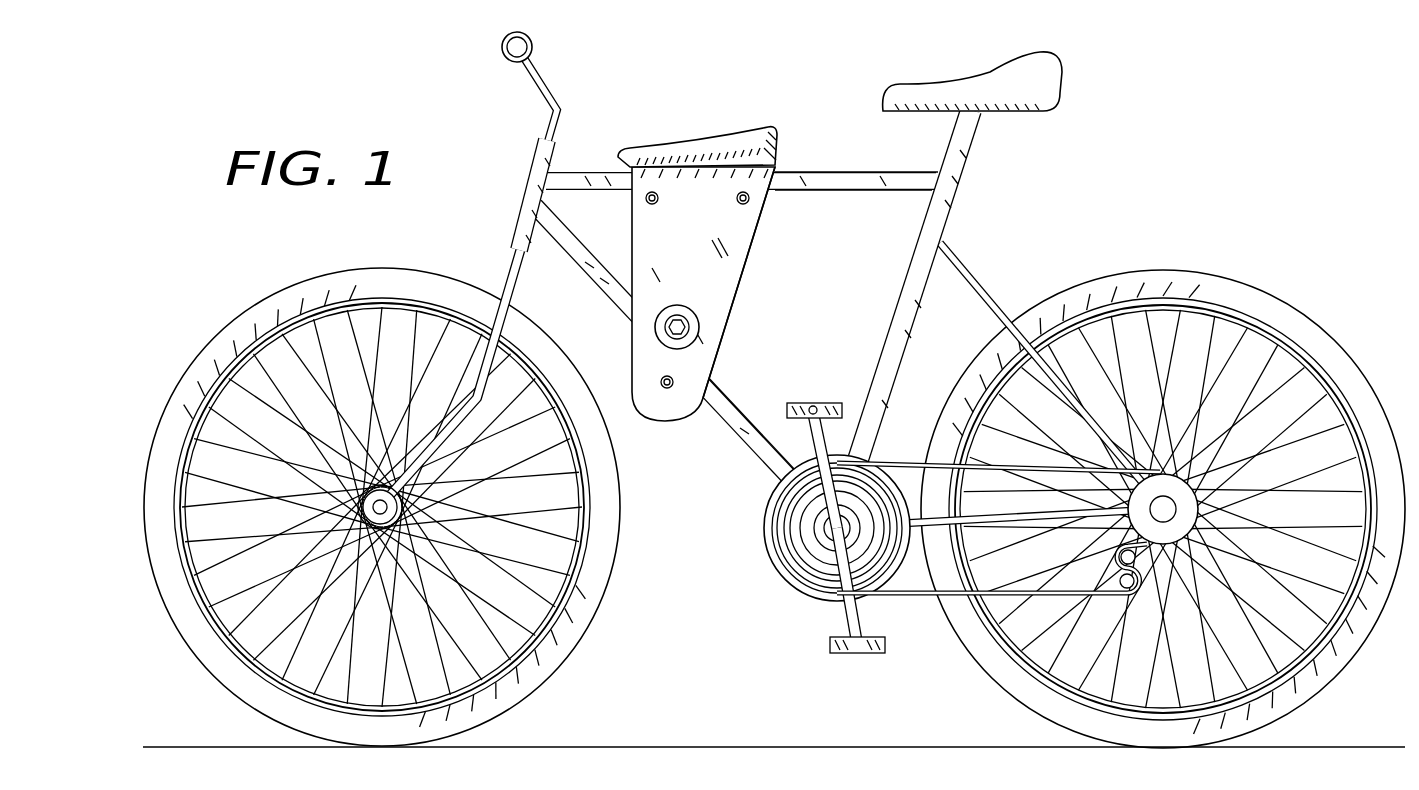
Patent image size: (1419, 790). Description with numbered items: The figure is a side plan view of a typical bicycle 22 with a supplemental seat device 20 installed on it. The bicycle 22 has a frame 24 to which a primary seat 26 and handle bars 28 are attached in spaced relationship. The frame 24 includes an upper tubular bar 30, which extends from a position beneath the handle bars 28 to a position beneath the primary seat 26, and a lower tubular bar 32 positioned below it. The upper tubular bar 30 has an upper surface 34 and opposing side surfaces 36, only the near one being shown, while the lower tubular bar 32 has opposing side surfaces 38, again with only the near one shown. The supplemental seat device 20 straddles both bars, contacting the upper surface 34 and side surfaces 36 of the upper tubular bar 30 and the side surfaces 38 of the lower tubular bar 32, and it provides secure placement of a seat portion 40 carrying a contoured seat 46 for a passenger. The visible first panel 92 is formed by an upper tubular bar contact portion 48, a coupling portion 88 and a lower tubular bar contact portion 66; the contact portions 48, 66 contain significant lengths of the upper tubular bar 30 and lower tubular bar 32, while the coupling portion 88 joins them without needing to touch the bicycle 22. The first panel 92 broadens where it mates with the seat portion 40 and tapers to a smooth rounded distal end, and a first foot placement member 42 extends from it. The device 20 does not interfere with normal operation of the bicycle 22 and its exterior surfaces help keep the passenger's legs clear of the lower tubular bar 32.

The supplemental seat device 20 is at (694, 253).
The bicycle 22 is at (841, 319).
The frame 24 is at (910, 333).
The primary seat 26 is at (1063, 64).
The handle bars 28 is at (505, 58).
The upper tubular bar 30 is at (742, 179).
The lower tubular bar 32 is at (686, 367).
The upper surface 34 is at (877, 170).
The side surfaces 36 is at (853, 185).
The side surfaces 38 is at (733, 422).
The seat portion 40 is at (780, 130).
The first foot placement member 42 is at (656, 318).
The seat 46 is at (702, 140).
The upper tubular bar contact portion 48 is at (700, 202).
The lower tubular bar contact portion 66 is at (672, 362).
The coupling portion 88 is at (693, 280).
The first panel 92 is at (733, 305).